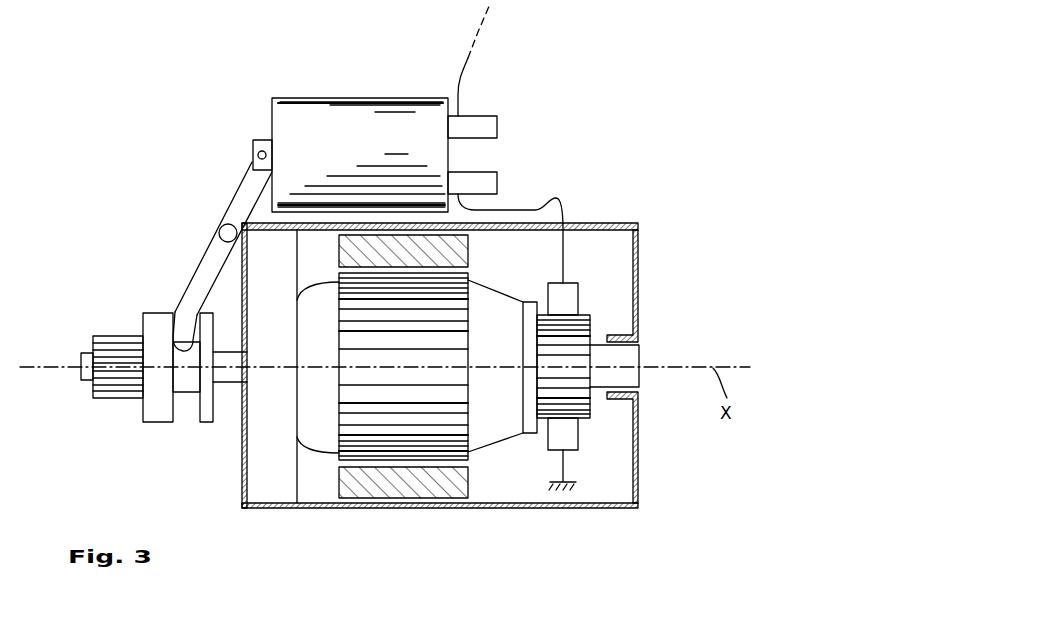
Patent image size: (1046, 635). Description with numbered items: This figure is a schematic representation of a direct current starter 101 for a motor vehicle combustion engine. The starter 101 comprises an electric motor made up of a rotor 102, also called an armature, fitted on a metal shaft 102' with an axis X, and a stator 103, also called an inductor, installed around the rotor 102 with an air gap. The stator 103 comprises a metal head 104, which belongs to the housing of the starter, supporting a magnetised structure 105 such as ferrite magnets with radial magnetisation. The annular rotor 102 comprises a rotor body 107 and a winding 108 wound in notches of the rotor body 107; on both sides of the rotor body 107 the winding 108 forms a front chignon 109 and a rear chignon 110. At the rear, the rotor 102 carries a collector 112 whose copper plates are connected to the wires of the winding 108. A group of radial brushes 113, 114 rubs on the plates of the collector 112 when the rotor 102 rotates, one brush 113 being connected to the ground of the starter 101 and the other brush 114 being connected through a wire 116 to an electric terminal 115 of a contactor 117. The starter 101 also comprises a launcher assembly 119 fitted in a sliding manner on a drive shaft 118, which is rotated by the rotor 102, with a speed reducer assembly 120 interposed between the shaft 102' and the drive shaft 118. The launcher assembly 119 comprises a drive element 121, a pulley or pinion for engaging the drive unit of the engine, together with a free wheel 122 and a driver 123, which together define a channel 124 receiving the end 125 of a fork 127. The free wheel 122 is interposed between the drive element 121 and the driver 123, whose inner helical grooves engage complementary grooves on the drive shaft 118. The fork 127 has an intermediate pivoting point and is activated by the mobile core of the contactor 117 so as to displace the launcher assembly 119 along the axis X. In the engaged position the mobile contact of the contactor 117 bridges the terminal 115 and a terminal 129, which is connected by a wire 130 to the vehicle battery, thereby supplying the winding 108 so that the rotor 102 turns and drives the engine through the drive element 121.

The starter 101 is at (603, 531).
The rotor 102 is at (462, 423).
The shaft 102' is at (651, 359).
The stator 103 is at (383, 512).
The metal head 104 is at (425, 508).
The magnetised structure 105 is at (463, 250).
The rotor body 107 is at (368, 437).
The winding 108 is at (516, 432).
The front chignon 109 is at (322, 438).
The rear chignon 110 is at (500, 425).
The collector 112 is at (583, 335).
The brush 113 is at (580, 437).
The brush 114 is at (573, 295).
The electric terminal 115 is at (490, 183).
The wire 116 is at (556, 198).
The contactor 117 is at (360, 122).
The drive shaft 118 is at (87, 355).
The launcher assembly 119 is at (150, 440).
The speed reducer assembly 120 is at (272, 468).
The drive element 121 is at (117, 340).
The free wheel 122 is at (155, 320).
The driver 123 is at (205, 418).
The channel 124 is at (188, 393).
The end of the fork 125 is at (184, 335).
The fork 127 is at (243, 192).
The terminal 129 is at (488, 127).
The wire 130 is at (457, 78).